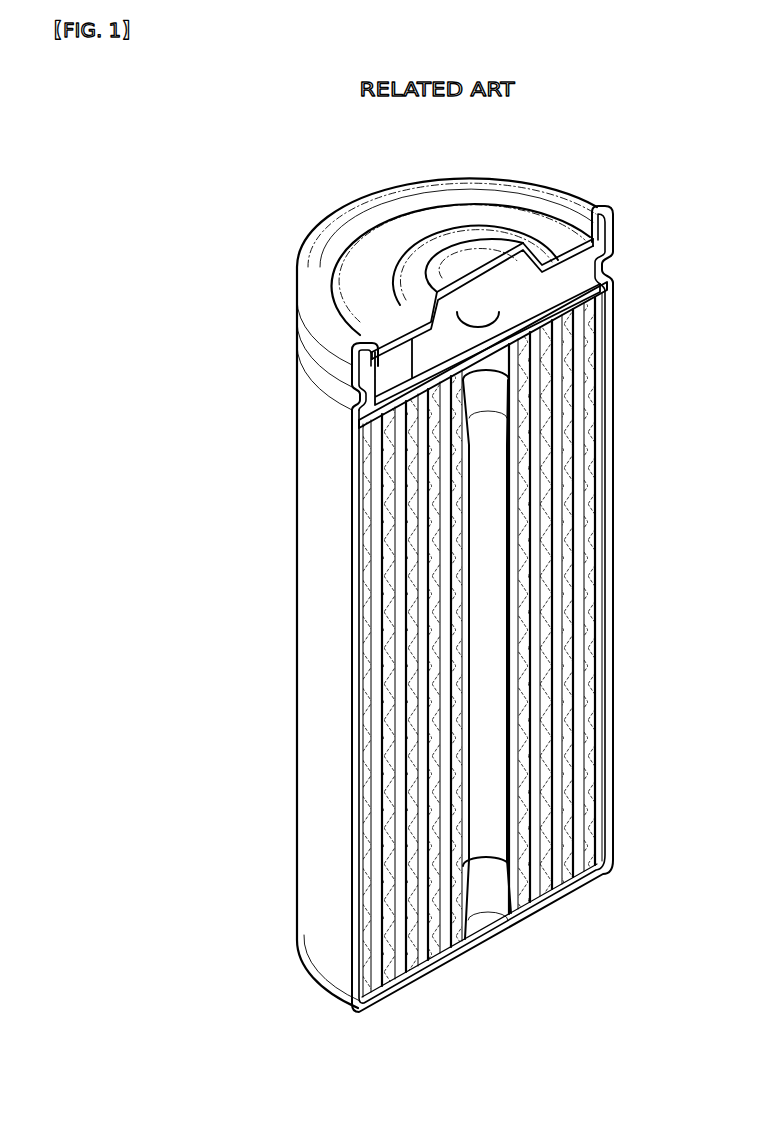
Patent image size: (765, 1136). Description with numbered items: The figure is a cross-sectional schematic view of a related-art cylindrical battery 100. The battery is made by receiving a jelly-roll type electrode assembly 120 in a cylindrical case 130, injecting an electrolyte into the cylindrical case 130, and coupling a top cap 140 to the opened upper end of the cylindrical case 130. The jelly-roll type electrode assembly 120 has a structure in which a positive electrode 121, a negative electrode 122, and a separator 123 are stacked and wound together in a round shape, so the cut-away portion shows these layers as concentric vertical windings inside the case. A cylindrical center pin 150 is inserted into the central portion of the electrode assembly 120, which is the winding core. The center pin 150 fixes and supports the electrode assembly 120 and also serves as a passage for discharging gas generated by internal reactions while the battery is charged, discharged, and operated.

The cylindrical battery 100 is at (226, 168).
The jelly-roll type electrode assembly 120 is at (528, 639).
The positive electrode 121 is at (603, 862).
The negative electrode 122 is at (586, 873).
The separator 123 is at (556, 893).
The cylindrical case 130 is at (612, 518).
The top cap 140 is at (620, 207).
The cylindrical center pin 150 is at (460, 626).